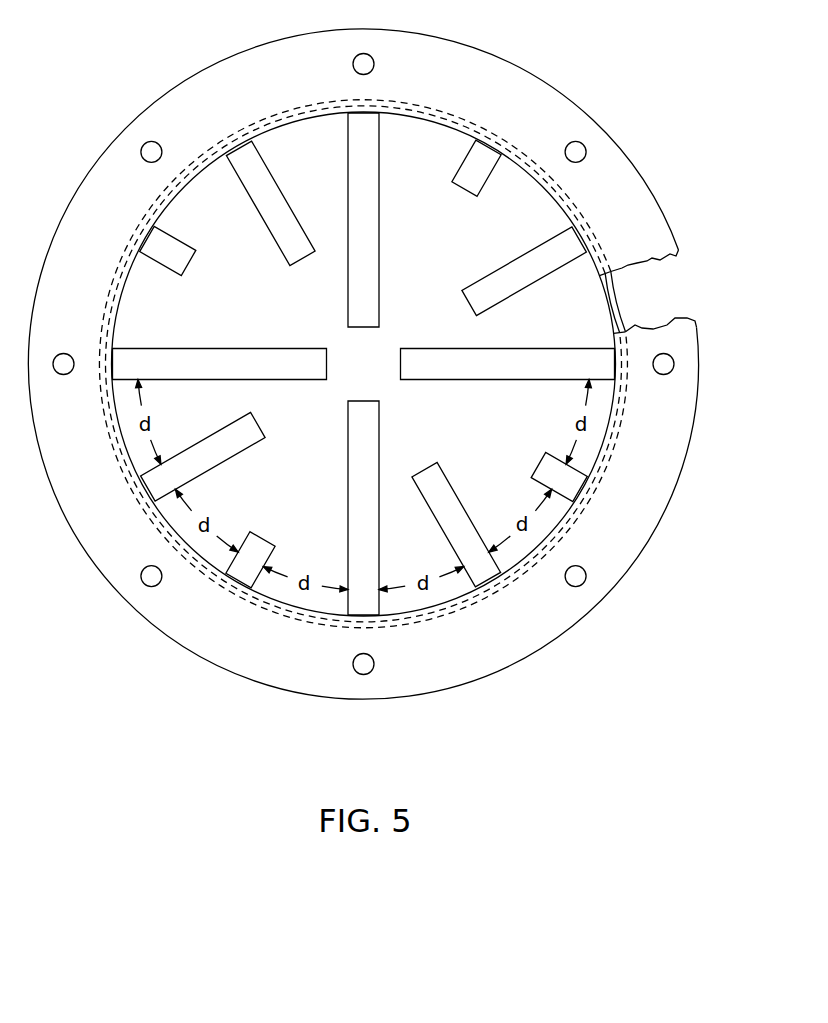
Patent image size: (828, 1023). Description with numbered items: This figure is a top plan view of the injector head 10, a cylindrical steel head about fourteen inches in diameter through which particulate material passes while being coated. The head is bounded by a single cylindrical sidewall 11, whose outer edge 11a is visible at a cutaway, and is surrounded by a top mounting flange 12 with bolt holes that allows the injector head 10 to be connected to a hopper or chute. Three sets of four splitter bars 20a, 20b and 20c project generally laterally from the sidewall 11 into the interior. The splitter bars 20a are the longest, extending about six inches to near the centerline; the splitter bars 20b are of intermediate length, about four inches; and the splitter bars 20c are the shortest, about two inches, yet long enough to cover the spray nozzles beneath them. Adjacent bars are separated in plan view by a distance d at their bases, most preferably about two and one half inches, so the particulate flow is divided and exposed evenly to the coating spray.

The injector head 10 is at (607, 65).
The sidewall 11 is at (619, 293).
The outer edge of flange 11a is at (622, 313).
The top mounting flange 12 is at (643, 529).
The splitter bars 20a is at (350, 176).
The splitter bars 20b is at (263, 210).
The splitter bars 20c is at (470, 161).